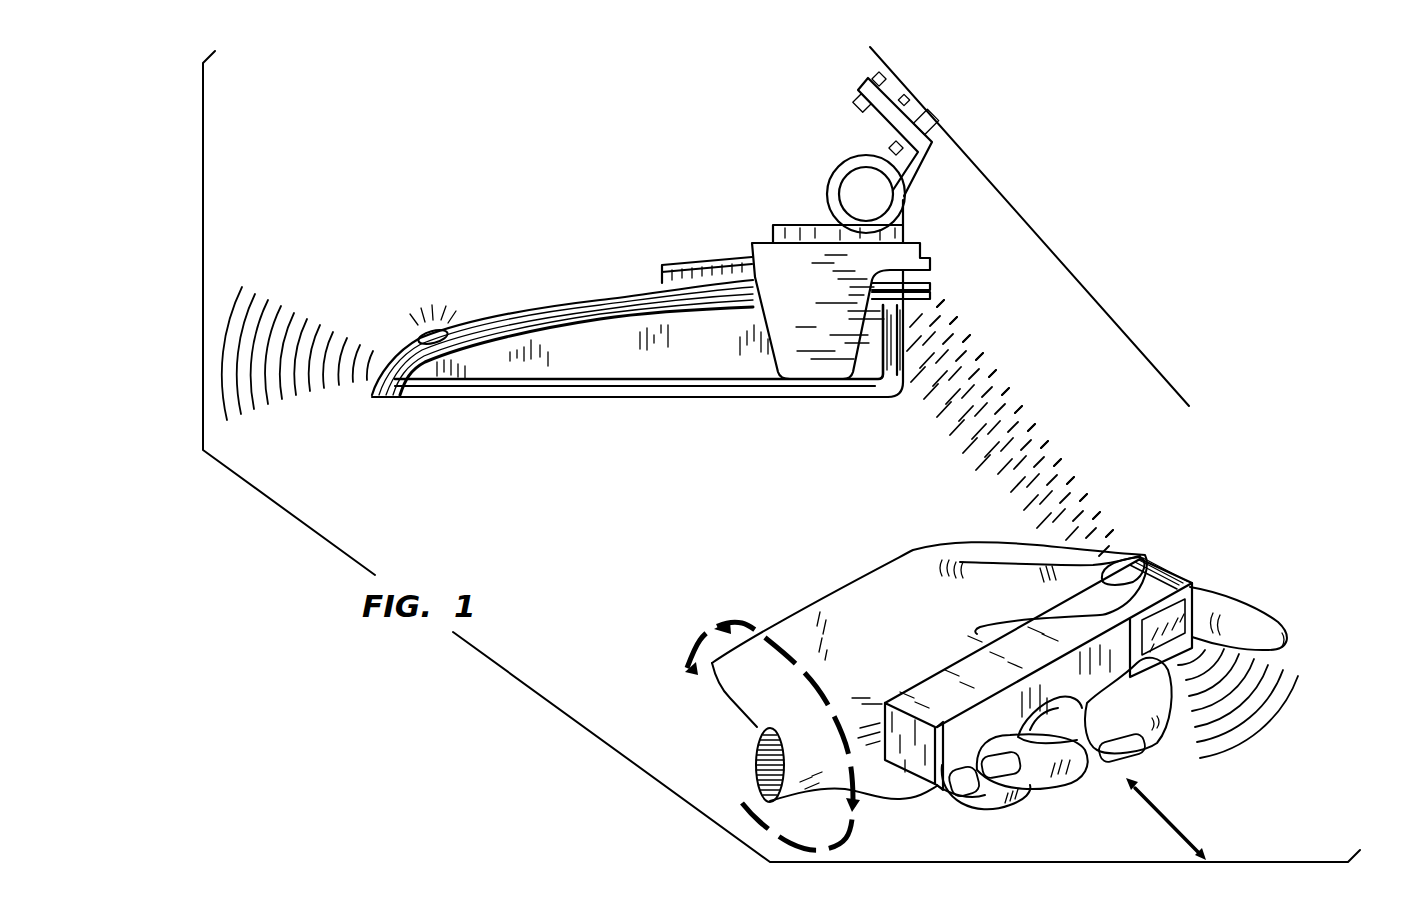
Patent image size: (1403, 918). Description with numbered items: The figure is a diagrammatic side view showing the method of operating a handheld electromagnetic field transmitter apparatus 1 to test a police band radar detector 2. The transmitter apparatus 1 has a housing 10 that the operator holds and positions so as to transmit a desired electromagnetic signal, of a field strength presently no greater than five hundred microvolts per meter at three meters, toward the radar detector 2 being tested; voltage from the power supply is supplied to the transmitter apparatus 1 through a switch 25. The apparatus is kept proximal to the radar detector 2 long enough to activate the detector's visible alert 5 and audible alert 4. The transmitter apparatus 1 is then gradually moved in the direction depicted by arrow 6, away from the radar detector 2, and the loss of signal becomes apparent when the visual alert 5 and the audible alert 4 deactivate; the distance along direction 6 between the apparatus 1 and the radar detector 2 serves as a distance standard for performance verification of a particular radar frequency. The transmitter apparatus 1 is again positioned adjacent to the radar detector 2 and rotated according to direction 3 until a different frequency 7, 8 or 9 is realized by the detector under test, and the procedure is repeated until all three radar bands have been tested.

The transmitter apparatus 1 is at (1163, 552).
The police band radar detector 2 is at (528, 268).
The direction of rotation 3 is at (746, 624).
The audible alert 4 is at (313, 392).
The visible alert 5 is at (420, 338).
The direction of movement 6 is at (1172, 819).
The frequency 7 is at (1298, 672).
The frequency 8 is at (975, 352).
The frequency 9 is at (958, 412).
The housing 10 is at (1082, 705).
The switch 25 is at (1180, 566).